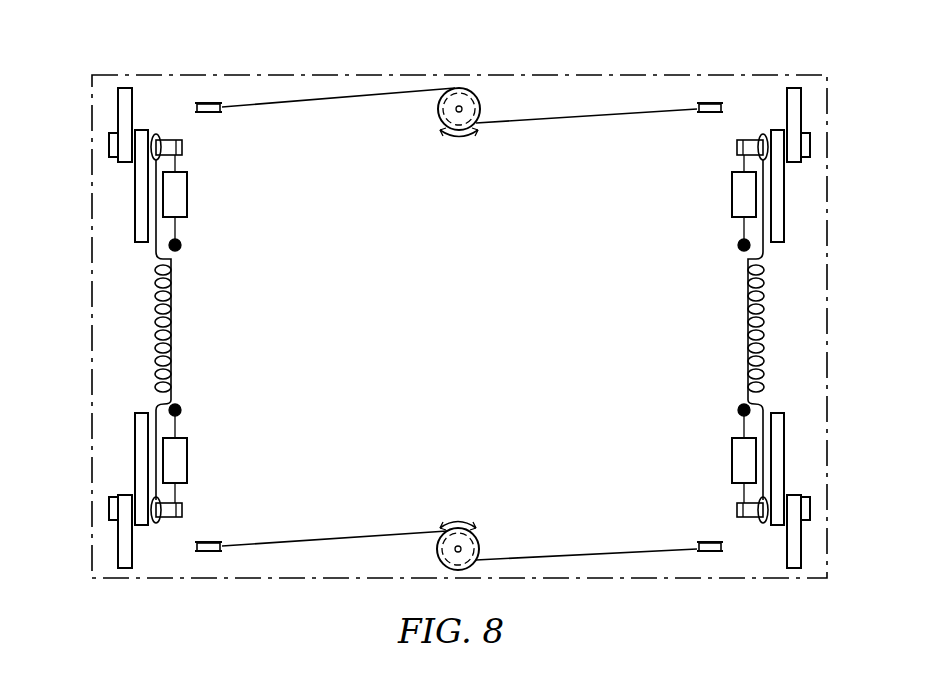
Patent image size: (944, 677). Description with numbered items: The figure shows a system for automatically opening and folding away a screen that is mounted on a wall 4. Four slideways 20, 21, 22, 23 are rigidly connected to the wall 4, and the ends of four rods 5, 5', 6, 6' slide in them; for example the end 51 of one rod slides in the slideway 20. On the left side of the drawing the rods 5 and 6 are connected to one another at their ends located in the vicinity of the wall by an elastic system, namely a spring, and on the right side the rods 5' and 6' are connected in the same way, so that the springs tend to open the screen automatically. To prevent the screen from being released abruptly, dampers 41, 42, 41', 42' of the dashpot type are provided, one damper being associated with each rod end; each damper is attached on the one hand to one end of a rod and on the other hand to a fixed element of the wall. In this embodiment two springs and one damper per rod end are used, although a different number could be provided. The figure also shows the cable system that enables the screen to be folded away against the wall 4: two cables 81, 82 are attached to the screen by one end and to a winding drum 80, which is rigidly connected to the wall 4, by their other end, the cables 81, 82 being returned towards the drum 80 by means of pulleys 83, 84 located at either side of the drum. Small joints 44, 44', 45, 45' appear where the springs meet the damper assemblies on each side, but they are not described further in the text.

The wall 4 is at (117, 324).
The rod 5 is at (104, 469).
The rod 5' is at (817, 469).
The rod 6 is at (102, 186).
The rod 6' is at (819, 186).
The slideway 20 is at (125, 538).
The slideway 21 is at (795, 540).
The slideway 22 is at (125, 110).
The slideway 23 is at (797, 108).
The damper 41 is at (200, 460).
The damper 41' is at (720, 460).
The damper 42 is at (200, 194).
The damper 42' is at (709, 194).
The lower pivot joint 44 is at (202, 396).
The lower pivot joint 44' is at (712, 401).
The upper pivot joint 45 is at (203, 248).
The upper pivot joint 45' is at (712, 252).
The end of rod 51 is at (165, 520).
The winding drum 80 is at (438, 110).
The cable 81 is at (313, 100).
The cable 82 is at (545, 122).
The pulley 83 is at (203, 102).
The pulley 84 is at (709, 102).